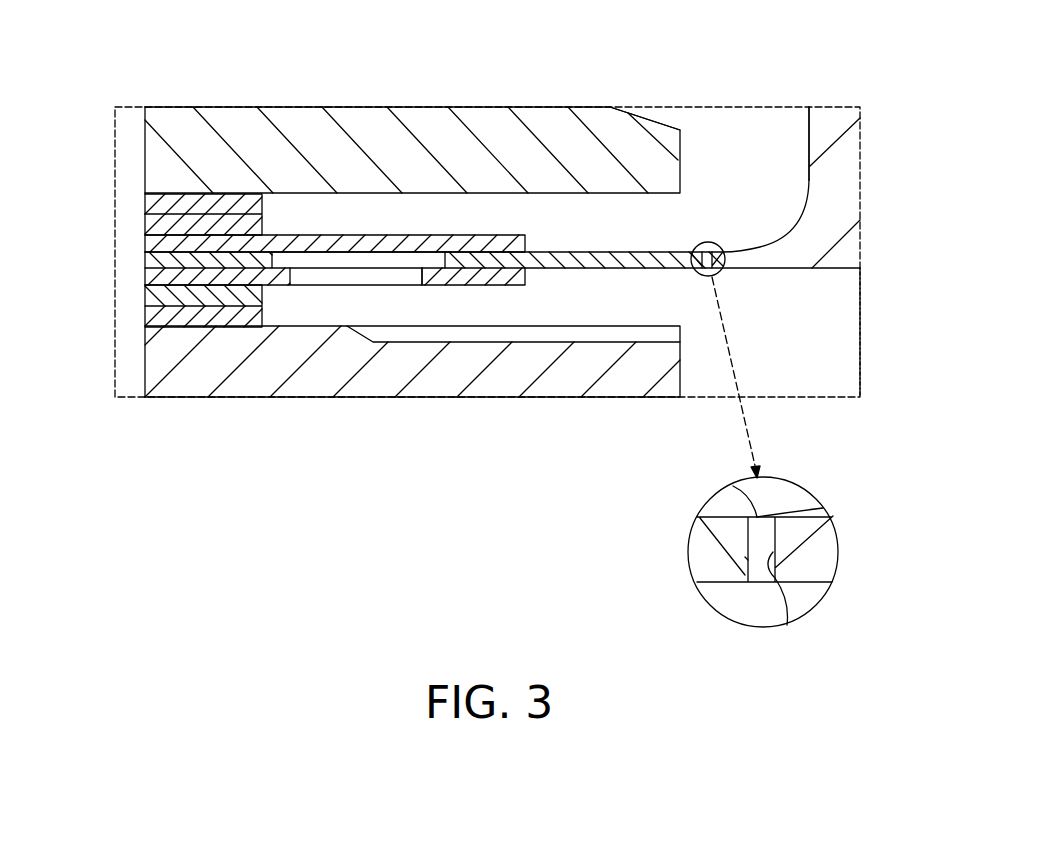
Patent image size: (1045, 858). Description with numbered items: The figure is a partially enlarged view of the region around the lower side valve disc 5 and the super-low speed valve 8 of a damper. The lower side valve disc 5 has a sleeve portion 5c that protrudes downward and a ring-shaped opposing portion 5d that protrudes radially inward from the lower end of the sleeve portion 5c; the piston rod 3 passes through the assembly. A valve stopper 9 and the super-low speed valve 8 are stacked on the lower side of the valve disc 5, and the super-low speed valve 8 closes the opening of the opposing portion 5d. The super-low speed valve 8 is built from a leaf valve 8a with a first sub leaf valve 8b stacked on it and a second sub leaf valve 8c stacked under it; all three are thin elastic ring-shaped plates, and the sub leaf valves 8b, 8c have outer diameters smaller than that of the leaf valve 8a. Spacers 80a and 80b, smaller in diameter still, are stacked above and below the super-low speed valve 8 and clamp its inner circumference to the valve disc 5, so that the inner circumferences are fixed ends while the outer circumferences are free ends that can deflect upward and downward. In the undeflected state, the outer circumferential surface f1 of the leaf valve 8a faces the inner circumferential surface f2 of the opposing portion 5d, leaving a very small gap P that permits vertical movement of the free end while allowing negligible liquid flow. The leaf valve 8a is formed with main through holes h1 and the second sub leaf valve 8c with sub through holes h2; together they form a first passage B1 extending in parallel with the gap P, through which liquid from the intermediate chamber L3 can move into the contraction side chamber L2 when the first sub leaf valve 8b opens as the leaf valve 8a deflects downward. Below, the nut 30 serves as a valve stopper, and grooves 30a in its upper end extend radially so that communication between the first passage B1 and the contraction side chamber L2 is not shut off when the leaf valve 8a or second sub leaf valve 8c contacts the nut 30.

The piston rod 3 is at (147, 143).
The valve stopper 9 is at (654, 126).
The intermediate chamber L3 is at (787, 125).
The sleeve portion 5c is at (862, 130).
The lower side valve disc 5 is at (868, 242).
The opposing portion 5d is at (768, 270).
The contraction side chamber L2 is at (845, 370).
The spacers 80a is at (145, 228).
The spacers 80b is at (145, 317).
The first sub leaf valve 8b is at (514, 230).
The super-low speed valve 8 is at (687, 231).
The second sub leaf valve 8c is at (528, 287).
The leaf valve 8a is at (705, 274).
The main through holes h1 is at (383, 234).
The sub through holes h2 is at (372, 286).
The first passage B1 is at (398, 279).
The nut 30 is at (319, 403).
The grooves 30a is at (492, 340).
The outer circumferential surface f1 is at (733, 486).
The inner circumferential surface f2 is at (787, 625).
The gap P is at (737, 564).